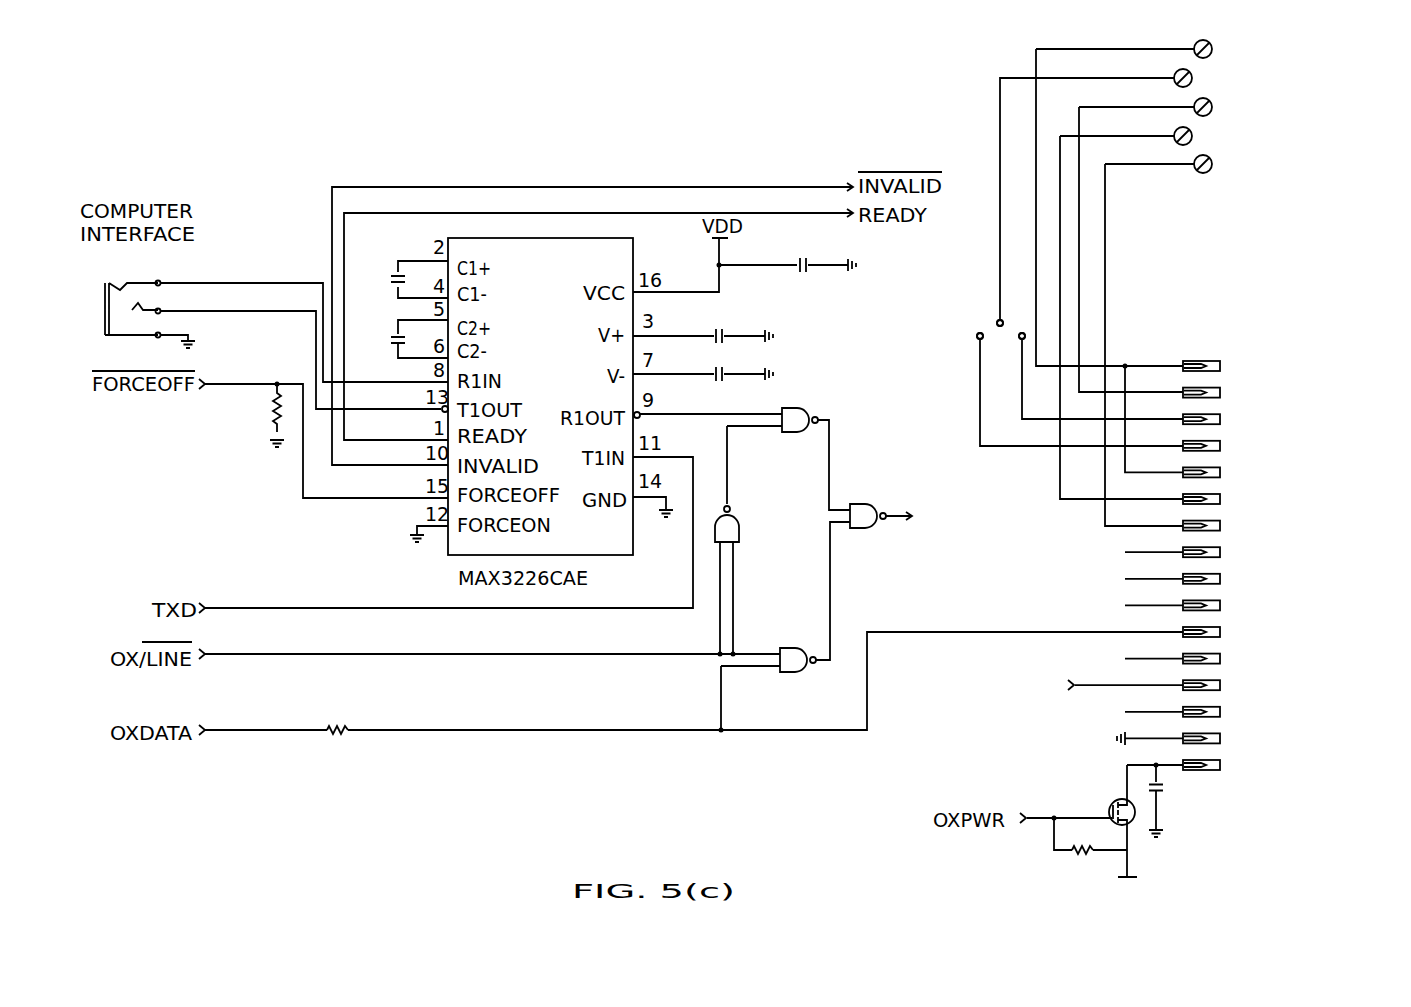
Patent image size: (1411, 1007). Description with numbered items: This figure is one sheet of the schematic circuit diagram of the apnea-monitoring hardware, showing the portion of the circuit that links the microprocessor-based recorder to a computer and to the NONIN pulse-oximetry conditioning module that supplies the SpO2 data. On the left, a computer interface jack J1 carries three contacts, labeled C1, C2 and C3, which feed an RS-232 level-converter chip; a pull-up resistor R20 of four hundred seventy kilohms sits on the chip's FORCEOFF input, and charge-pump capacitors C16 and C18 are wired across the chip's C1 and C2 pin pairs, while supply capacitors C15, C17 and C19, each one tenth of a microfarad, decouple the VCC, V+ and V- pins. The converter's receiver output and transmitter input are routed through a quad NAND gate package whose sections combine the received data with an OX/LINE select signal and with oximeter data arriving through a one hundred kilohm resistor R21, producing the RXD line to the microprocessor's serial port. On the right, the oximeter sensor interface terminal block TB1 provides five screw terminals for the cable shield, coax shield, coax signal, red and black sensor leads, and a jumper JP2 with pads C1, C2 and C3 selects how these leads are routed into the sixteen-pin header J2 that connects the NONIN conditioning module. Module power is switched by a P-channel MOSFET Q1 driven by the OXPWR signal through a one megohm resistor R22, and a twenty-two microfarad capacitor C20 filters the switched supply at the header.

The computer interface jack connector J1 is at (133, 322).
The jack contact / jumper net C1 is at (671, 379).
The jack contact / jumper net C2 is at (667, 243).
The jack contact / jumper net C3 is at (671, 339).
The 470K resistor R20 is at (254, 415).
The 0.1 uF charge pump capacitor C16 is at (399, 275).
The 0.1 uF charge pump capacitor C18 is at (399, 336).
The 0.1 uF VCC decoupling capacitor C15 is at (787, 255).
The 0.1 uF V+ capacitor C17 is at (703, 324).
The 0.1 uF V- capacitor C19 is at (703, 362).
The 100K resistor R21 is at (343, 730).
The oximeter sensor interface terminal block (Nonin model 9000A) TB1 is at (1201, 276).
The jumper JP2 is at (974, 323).
The Nonin 2332-000 module interface header J2 is at (1177, 541).
The 22uF/10V capacitor C20 is at (1203, 801).
The ZXM61P02F P-channel MOSFET Q1 is at (1077, 831).
The 1M resistor R22 is at (1090, 860).